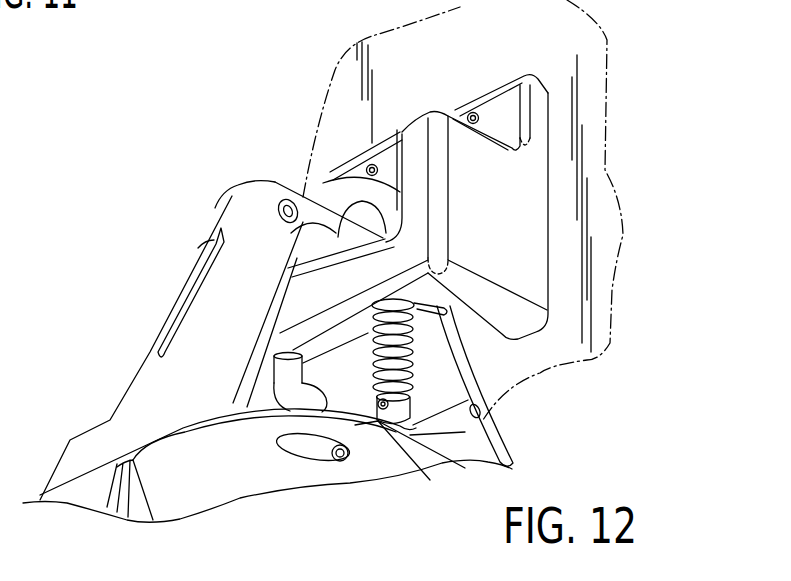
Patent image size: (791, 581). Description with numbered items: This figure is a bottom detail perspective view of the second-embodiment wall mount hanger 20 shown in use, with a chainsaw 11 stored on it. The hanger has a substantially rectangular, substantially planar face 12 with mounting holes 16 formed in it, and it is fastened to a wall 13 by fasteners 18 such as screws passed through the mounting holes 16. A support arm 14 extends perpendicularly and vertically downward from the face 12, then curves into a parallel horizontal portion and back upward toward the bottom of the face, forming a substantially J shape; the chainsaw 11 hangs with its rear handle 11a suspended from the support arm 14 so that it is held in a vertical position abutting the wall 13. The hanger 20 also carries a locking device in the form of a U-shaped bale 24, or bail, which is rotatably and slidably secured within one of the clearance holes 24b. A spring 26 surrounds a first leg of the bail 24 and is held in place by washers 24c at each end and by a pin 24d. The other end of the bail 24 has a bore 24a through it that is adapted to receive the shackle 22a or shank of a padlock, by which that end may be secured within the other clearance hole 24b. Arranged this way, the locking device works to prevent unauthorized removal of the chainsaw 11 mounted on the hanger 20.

The chainsaw 11 is at (152, 229).
The rear handle 11a is at (206, 219).
The substantially planar face 12 is at (380, 150).
The wall 13 is at (582, 32).
The support arm 14 is at (323, 298).
The mounting holes 16 is at (487, 128).
The fasteners 18 is at (368, 164).
The wall mount hanger 20 is at (553, 289).
The shackle 22a is at (298, 395).
The U-shaped bale 24 is at (317, 188).
The bore 24a is at (273, 364).
The clearance holes 24b is at (281, 352).
The washers 24c is at (402, 301).
The pin 24d is at (378, 402).
The spring 26 is at (408, 354).